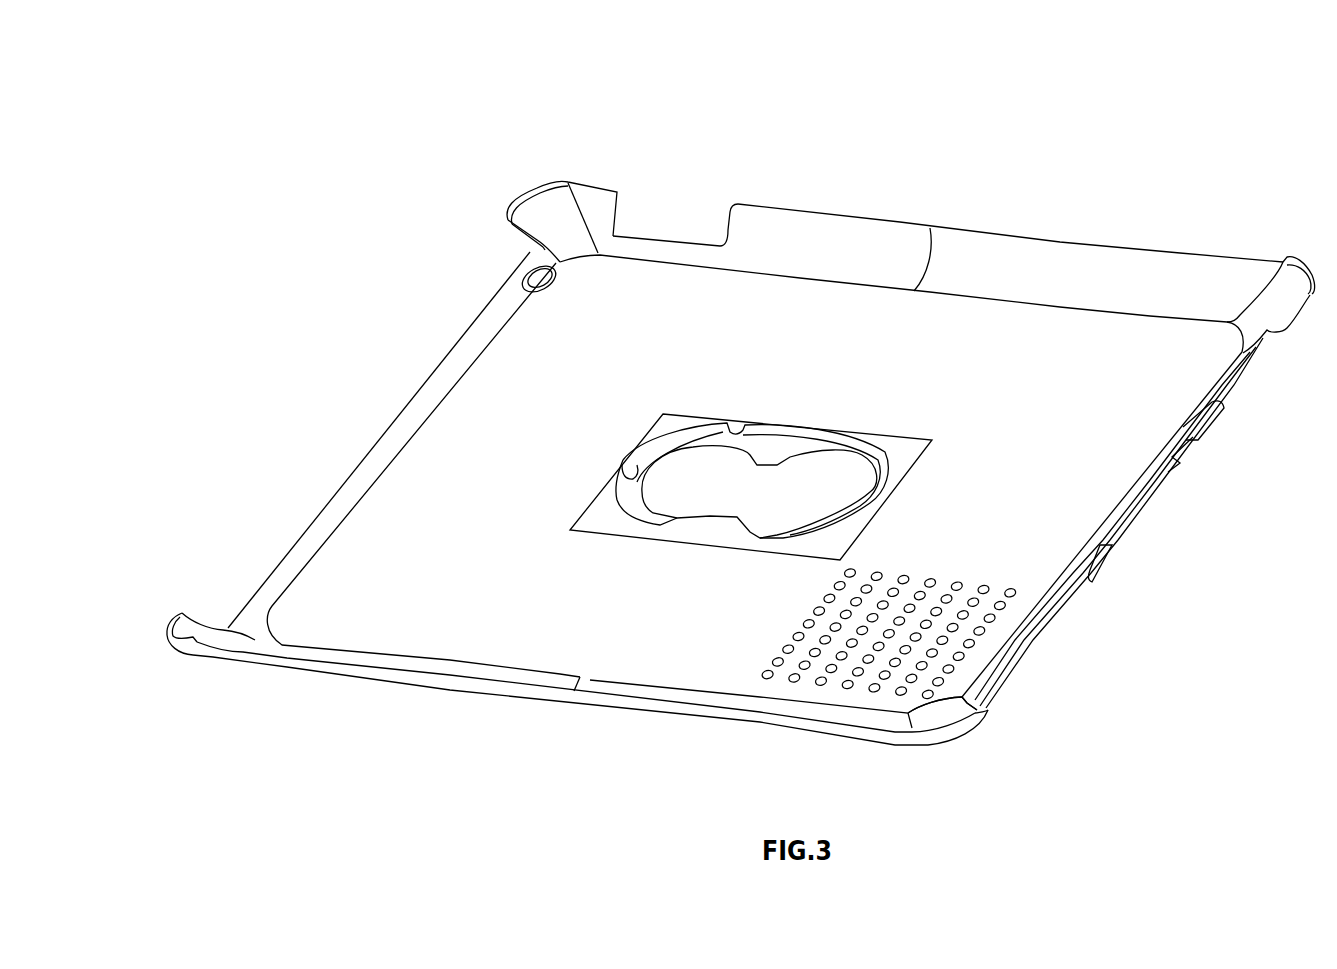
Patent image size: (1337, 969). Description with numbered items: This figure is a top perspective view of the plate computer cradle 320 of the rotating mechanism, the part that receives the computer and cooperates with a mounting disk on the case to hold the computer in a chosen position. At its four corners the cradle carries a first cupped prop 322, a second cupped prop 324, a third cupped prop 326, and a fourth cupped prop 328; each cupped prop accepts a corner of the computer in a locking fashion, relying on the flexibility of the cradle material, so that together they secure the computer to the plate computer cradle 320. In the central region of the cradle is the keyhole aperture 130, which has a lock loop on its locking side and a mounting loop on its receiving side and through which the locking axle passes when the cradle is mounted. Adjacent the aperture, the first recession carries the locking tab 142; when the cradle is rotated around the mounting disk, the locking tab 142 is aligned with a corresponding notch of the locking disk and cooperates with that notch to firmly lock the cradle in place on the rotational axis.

The plate computer cradle 320 is at (1127, 102).
The keyhole aperture 130 is at (773, 453).
The locking tab 142 is at (622, 464).
The first cupped prop 322 is at (541, 184).
The second cupped prop 324 is at (1293, 297).
The third cupped prop 326 is at (190, 647).
The fourth cupped prop 328 is at (962, 723).